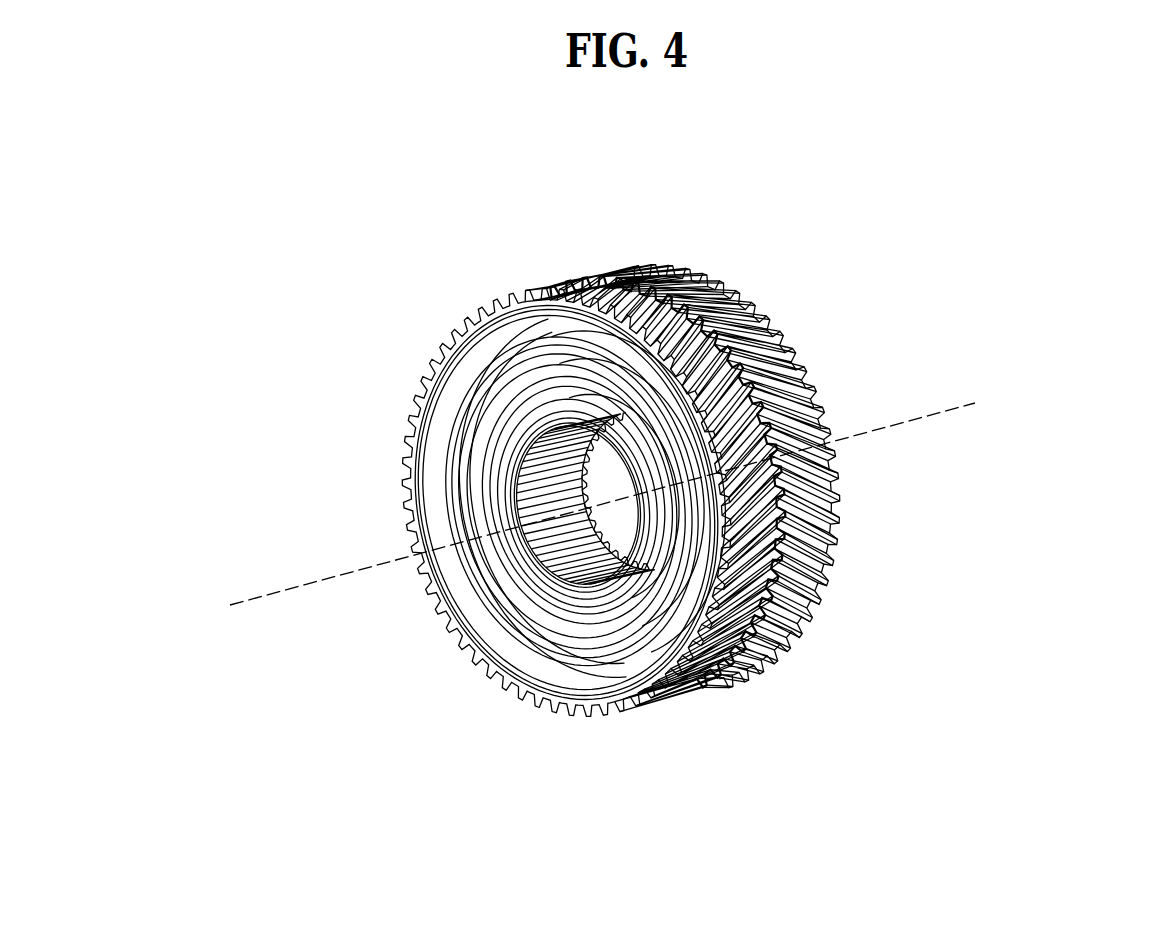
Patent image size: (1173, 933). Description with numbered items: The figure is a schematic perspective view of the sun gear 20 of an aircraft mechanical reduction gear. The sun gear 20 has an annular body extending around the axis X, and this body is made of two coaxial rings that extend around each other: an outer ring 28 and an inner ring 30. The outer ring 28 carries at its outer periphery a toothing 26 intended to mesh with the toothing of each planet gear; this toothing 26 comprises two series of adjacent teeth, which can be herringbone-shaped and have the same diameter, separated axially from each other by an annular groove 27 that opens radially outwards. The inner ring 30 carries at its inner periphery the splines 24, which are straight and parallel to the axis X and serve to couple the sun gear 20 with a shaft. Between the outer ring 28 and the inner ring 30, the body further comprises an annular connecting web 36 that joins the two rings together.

The sun gear 20 is at (850, 321).
The splines 24 is at (548, 537).
The toothing 26 is at (640, 272).
The annular groove 27 is at (733, 298).
The outer ring 28 is at (517, 687).
The inner ring 30 is at (513, 527).
The annular connecting web 36 is at (634, 707).
The axis X is at (948, 412).